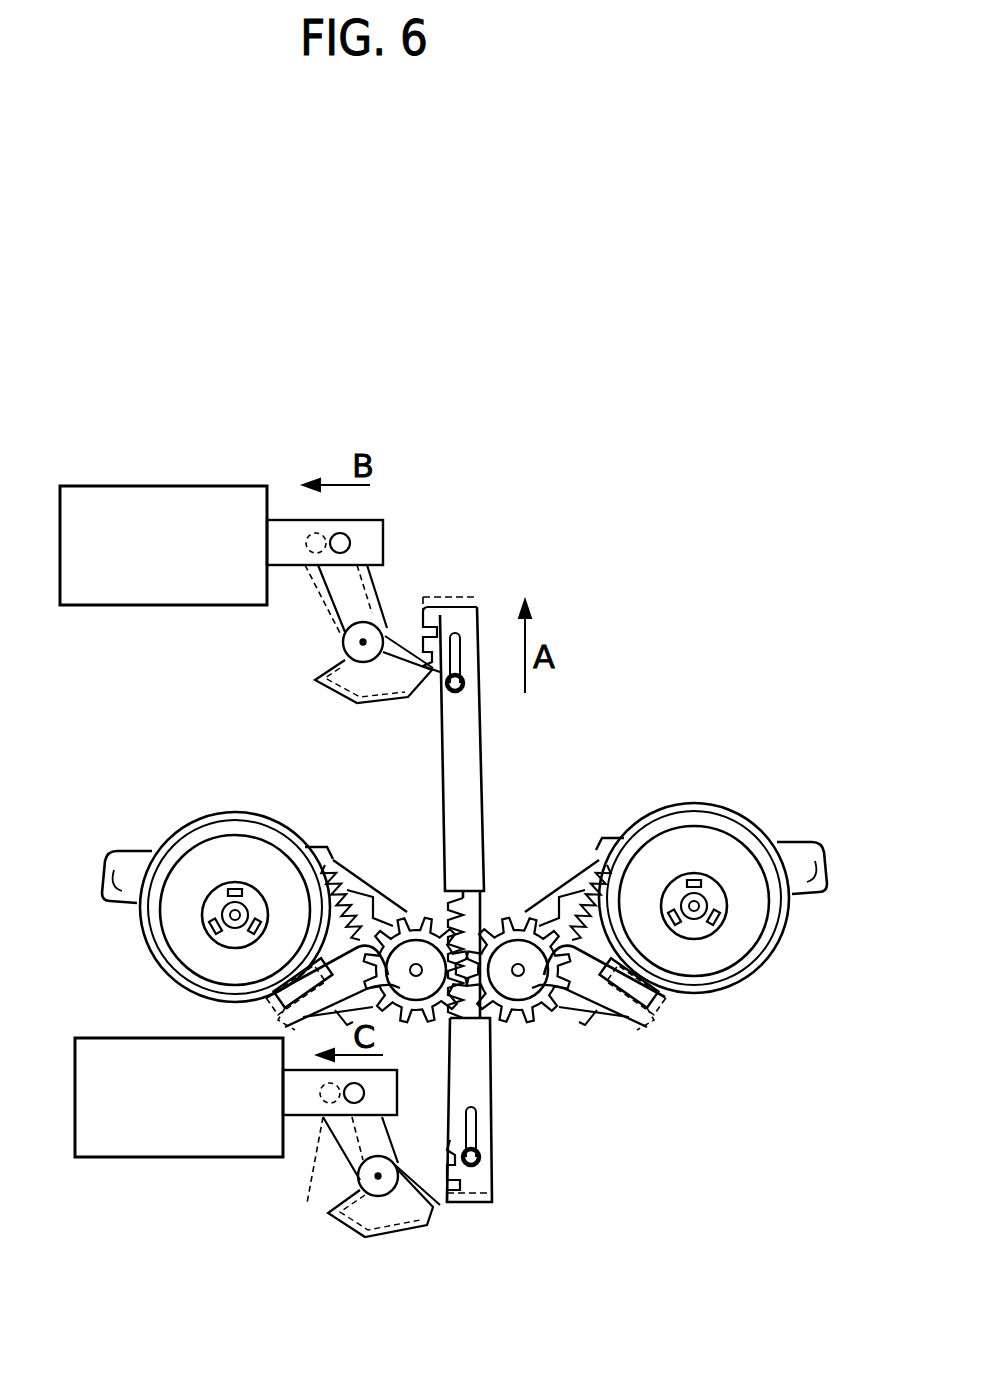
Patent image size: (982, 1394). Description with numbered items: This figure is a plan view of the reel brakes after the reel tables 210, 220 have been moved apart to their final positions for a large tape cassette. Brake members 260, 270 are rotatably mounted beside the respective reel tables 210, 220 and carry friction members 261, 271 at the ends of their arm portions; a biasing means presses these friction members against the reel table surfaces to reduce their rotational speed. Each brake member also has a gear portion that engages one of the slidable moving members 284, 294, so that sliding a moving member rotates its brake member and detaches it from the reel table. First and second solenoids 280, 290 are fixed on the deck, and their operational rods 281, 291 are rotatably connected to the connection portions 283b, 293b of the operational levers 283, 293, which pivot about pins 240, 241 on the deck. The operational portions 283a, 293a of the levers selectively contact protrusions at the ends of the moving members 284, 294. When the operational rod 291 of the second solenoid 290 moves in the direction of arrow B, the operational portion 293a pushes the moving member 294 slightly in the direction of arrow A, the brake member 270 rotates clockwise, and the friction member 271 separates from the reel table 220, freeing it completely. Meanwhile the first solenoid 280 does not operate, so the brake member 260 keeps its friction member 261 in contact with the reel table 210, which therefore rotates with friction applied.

The reel table 210 is at (220, 865).
The reel table 220 is at (727, 862).
The pin 240 is at (372, 1200).
The pin 241 is at (345, 640).
The brake member 260 is at (373, 917).
The friction member 261 is at (287, 990).
The brake member 270 is at (583, 963).
The friction member 271 is at (638, 1017).
The first solenoid 280 is at (142, 1132).
The operational rod 281 is at (305, 1098).
The operational lever 283 is at (405, 1215).
The operational portion 283a is at (442, 1213).
The connection portion 283b is at (352, 1103).
The moving member 284 is at (483, 1130).
The second solenoid 290 is at (131, 500).
The operational rod 291 is at (283, 530).
The operational lever 293 is at (390, 643).
The operational portion 293a is at (458, 680).
The connection portion 293b is at (345, 537).
The moving member 294 is at (463, 840).